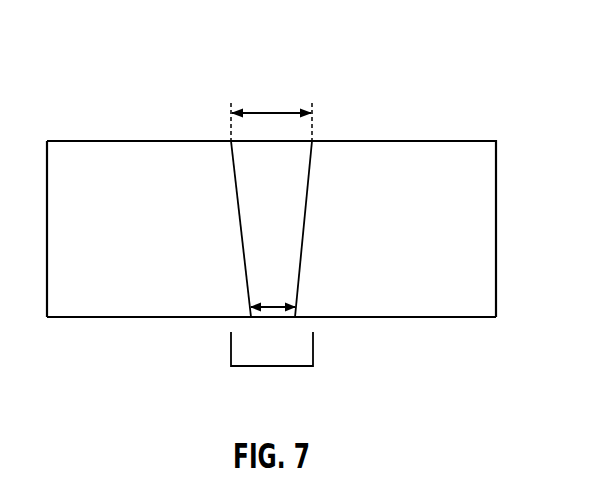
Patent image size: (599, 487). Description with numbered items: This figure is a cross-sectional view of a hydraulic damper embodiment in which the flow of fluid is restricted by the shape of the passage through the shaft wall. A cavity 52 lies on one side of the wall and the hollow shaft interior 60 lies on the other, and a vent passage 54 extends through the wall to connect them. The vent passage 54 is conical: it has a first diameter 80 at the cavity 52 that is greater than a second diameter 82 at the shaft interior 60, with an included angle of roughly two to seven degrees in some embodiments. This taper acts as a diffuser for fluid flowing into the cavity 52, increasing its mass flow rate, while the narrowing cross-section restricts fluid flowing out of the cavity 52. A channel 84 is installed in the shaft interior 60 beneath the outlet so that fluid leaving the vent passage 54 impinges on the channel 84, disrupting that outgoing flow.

The cavity 52 is at (261, 48).
The vent passage 54 is at (290, 205).
The shaft interior 60 is at (398, 418).
The first diameter 80 is at (272, 112).
The second diameter 82 is at (270, 303).
The channel 84 is at (302, 346).